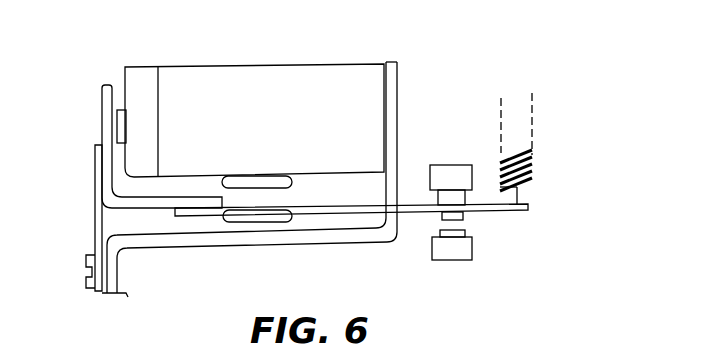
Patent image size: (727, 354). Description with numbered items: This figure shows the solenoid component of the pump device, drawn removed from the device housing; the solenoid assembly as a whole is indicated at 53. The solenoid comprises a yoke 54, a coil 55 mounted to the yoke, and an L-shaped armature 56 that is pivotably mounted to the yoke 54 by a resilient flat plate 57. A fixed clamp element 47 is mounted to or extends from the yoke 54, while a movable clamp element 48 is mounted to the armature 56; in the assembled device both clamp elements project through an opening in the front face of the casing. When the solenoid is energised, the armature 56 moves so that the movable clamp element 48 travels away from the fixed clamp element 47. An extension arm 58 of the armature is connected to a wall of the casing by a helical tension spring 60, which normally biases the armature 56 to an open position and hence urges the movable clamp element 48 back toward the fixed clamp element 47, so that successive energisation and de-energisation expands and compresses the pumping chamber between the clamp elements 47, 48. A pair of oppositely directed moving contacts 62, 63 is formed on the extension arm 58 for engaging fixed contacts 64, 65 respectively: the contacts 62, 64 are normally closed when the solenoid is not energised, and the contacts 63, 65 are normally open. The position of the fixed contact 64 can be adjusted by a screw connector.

The fixed clamp element 47 is at (255, 172).
The movable clamp element 48 is at (238, 218).
The mounting assembly 53 is at (427, 68).
The yoke 54 is at (268, 246).
The coil 55 is at (275, 73).
The L-shaped armature 56 is at (105, 91).
The resilient flat plate 57 is at (100, 223).
The extension arm 58 is at (353, 211).
The helical tension spring 60 is at (535, 165).
The moving contact 62 is at (472, 195).
The moving contact 63 is at (472, 217).
The fixed contact 64 is at (462, 155).
The fixed contact 65 is at (473, 235).